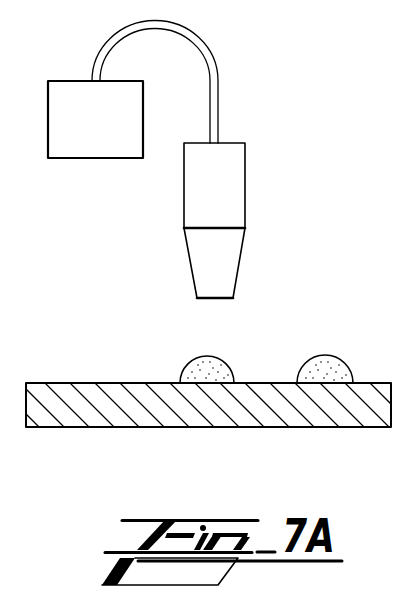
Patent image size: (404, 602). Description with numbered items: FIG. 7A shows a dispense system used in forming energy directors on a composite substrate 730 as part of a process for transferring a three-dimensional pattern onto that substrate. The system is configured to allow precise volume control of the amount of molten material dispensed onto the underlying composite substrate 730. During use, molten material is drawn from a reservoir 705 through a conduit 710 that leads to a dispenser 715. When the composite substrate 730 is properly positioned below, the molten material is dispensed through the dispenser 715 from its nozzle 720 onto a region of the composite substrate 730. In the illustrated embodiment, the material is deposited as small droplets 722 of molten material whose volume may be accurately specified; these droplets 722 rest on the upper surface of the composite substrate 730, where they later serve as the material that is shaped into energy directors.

The reservoir 705 is at (93, 158).
The conduit 710 is at (213, 62).
The dispenser 715 is at (245, 190).
The nozzle 720 is at (188, 265).
The droplets 722 is at (198, 356).
The composite substrate 730 is at (86, 427).